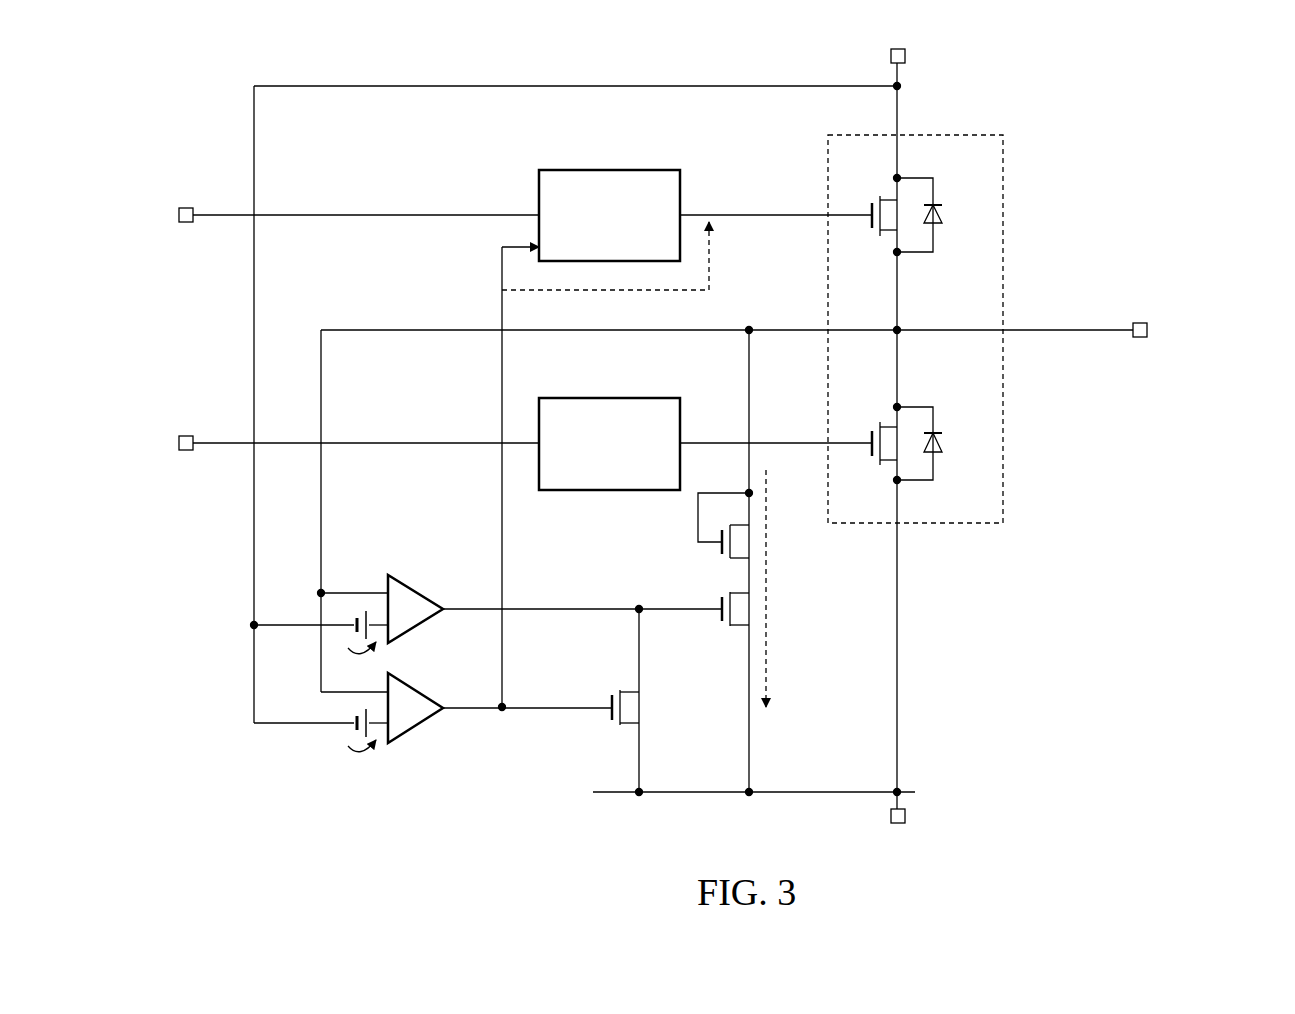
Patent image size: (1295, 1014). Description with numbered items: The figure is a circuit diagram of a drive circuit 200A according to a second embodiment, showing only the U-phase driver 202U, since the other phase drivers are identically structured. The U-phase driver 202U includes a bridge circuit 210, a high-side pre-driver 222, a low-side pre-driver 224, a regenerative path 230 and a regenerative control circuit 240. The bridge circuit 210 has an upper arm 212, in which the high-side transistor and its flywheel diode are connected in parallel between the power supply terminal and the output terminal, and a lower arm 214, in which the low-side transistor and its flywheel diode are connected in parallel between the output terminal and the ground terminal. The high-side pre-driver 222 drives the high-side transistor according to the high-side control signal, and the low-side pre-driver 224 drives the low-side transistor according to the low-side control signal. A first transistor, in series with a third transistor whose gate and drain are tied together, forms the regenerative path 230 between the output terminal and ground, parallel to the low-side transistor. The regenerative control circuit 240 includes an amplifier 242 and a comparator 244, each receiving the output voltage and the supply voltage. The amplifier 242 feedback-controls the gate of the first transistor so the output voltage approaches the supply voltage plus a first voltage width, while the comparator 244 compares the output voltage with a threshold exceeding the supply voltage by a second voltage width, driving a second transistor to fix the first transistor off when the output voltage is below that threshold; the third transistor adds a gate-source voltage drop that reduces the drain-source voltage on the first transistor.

The drive circuit 200A is at (1265, 53).
The U-phase driver 202U is at (1018, 113).
The bridge circuit 210 is at (1003, 230).
The upper arm 212 is at (925, 262).
The lower arm 214 is at (925, 400).
The high-side pre-driver 222 is at (640, 170).
The low-side pre-driver 224 is at (640, 398).
The regenerative path 230 is at (768, 643).
The regenerative control circuit 240 is at (472, 780).
The amplifier 242 is at (422, 595).
The comparator 244 is at (422, 692).